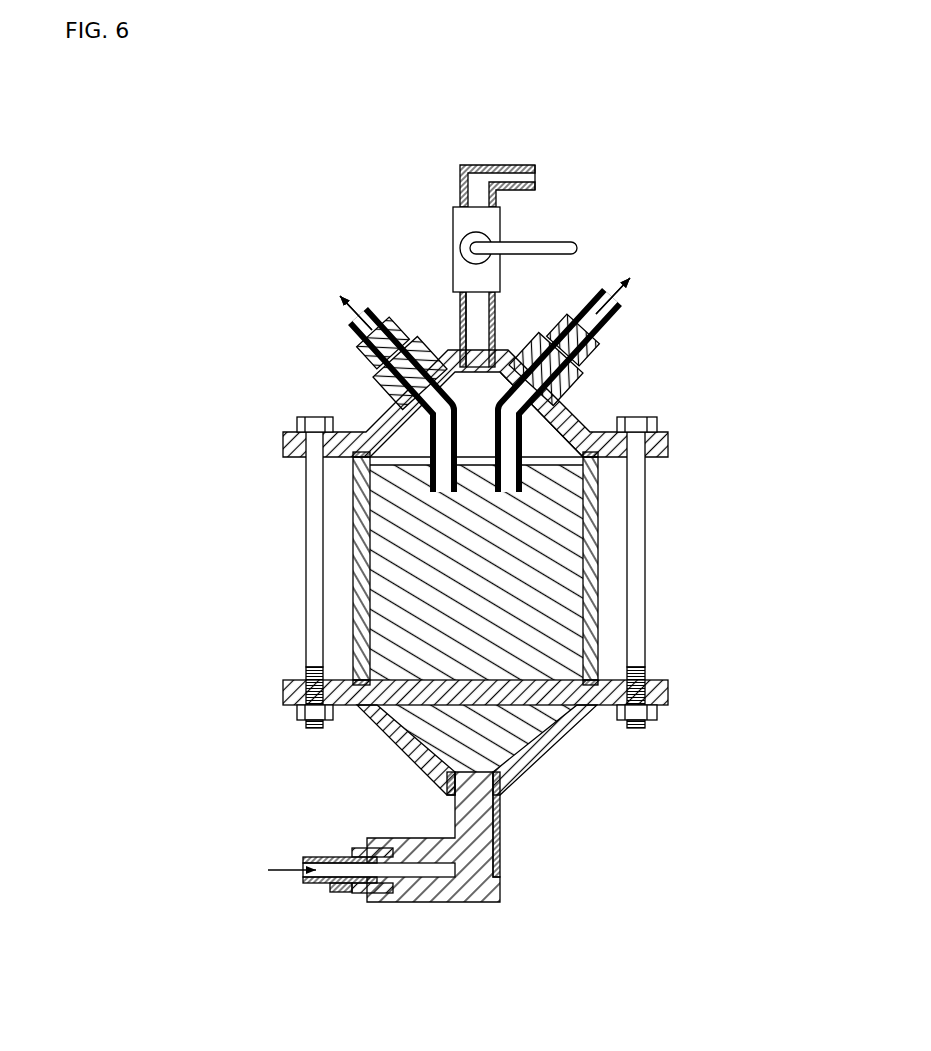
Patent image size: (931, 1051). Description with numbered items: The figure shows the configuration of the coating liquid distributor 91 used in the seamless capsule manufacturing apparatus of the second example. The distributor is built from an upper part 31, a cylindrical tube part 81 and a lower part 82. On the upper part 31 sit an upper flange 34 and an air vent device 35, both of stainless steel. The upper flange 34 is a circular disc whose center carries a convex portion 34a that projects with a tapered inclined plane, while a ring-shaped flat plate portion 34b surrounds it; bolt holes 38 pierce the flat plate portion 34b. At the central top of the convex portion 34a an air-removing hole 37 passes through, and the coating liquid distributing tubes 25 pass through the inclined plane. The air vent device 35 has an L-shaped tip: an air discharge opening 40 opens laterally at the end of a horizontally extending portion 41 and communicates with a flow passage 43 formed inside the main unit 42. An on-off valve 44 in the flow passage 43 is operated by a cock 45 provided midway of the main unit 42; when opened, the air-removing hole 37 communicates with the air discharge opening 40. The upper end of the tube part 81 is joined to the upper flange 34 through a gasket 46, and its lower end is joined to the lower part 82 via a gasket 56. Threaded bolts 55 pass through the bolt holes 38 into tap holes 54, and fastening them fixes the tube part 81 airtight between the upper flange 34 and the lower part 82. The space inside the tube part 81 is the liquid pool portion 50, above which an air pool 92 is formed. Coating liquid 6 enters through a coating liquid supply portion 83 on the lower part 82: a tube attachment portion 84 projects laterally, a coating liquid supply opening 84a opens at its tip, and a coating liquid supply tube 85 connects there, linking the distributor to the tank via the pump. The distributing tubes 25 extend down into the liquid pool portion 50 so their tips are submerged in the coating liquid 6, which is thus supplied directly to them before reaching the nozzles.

The coating liquid 6 is at (541, 568).
The coating liquid distributing tubes 25 is at (354, 326).
The upper part 31 is at (582, 408).
The upper flange 34 is at (463, 419).
The convex portion 34a is at (390, 413).
The flat plate portion 34b is at (290, 443).
The air vent device 35 is at (537, 244).
The air-removing hole 37 is at (474, 368).
The bolt holes 38 is at (640, 450).
The air discharge opening 40 is at (540, 147).
The extending portion 41 is at (529, 165).
The main unit 42 is at (500, 301).
The flow passage 43 is at (470, 298).
The on-off valve 44 is at (482, 230).
The cock 45 is at (578, 247).
The gasket 46 is at (378, 462).
The liquid pool portion 50 is at (465, 642).
The tap holes 54 is at (649, 680).
The threaded bolts 55 is at (640, 504).
The gasket 56 is at (372, 680).
The tube part 81 is at (595, 570).
The lower part 82 is at (572, 736).
The coating liquid supply portion 83 is at (501, 848).
The tube attachment portion 84 is at (383, 893).
The coating liquid supply opening 84a is at (333, 892).
The coating liquid supply tube 85 is at (318, 857).
The coating liquid distributor 91 is at (749, 350).
The air pool 92 is at (558, 433).